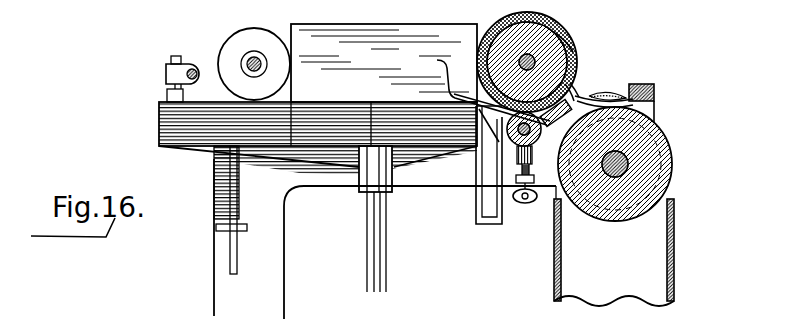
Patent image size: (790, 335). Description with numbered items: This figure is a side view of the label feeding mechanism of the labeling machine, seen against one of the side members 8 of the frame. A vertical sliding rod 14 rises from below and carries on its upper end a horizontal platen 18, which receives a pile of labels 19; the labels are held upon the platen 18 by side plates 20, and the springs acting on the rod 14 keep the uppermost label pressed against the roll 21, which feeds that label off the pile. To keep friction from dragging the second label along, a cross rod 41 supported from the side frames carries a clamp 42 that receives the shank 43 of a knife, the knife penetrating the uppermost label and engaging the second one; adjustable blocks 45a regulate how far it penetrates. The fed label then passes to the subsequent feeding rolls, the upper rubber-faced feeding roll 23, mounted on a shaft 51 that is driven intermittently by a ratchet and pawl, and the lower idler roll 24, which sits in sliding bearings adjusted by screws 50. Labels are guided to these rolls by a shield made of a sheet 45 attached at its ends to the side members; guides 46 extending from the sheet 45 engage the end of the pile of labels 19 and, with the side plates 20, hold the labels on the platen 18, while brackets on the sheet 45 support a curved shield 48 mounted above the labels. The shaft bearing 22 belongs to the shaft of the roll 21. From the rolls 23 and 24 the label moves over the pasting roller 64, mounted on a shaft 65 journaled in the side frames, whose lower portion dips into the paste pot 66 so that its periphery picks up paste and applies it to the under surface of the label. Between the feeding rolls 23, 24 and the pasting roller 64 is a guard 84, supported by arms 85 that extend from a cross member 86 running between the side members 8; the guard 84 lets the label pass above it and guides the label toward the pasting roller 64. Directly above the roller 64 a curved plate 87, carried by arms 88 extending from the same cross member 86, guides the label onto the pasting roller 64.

The side member 8 is at (385, 232).
The vertical sliding rod 14 is at (380, 247).
The horizontal platen 18 is at (183, 150).
The pile of labels 19 is at (176, 120).
The side plates 20 is at (384, 63).
The roll 21 is at (255, 60).
The shaft 22 is at (252, 72).
The feeding roll 23 is at (522, 48).
The idler roll 24 is at (505, 150).
The cross rod 41 is at (196, 72).
The clamp 42 is at (182, 74).
The shank 43 is at (170, 61).
The sheet 45 is at (523, 204).
The adjustable blocks 45a is at (168, 96).
The guides 46 is at (476, 178).
The curved shield 48 is at (477, 88).
The screws 50 is at (525, 206).
The shaft 51 is at (554, 33).
The pasting roller 64 is at (627, 160).
The shaft 65 is at (660, 177).
The paste pot 66 is at (614, 246).
The guard 84 is at (558, 126).
The arms 85 is at (578, 99).
The cross member 86 is at (656, 92).
The curved plate 87 is at (604, 97).
The arms 88 is at (628, 90).